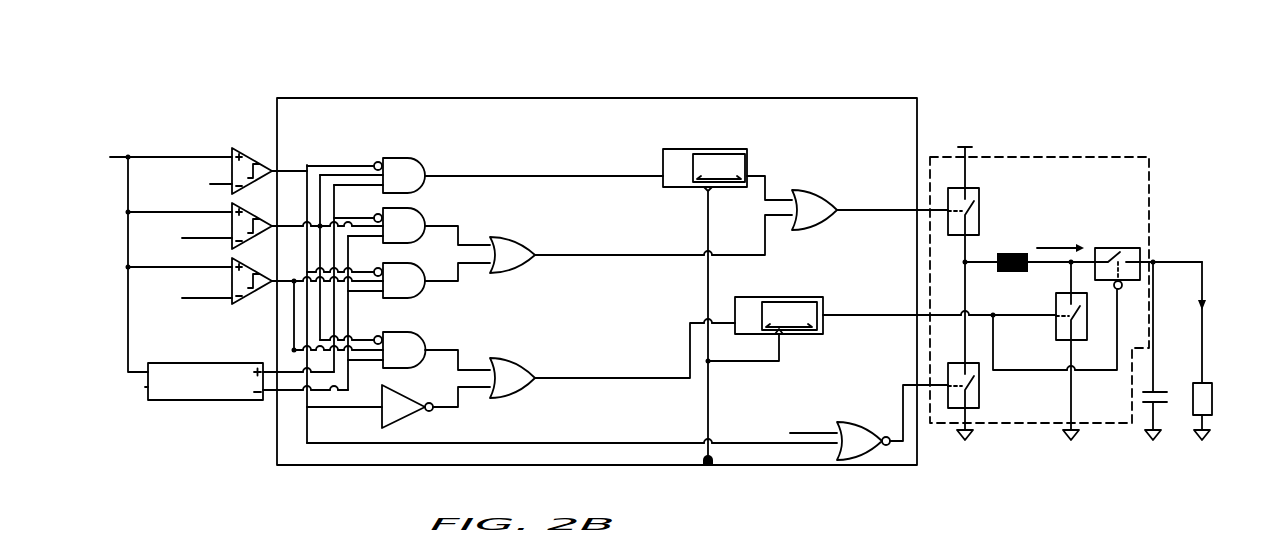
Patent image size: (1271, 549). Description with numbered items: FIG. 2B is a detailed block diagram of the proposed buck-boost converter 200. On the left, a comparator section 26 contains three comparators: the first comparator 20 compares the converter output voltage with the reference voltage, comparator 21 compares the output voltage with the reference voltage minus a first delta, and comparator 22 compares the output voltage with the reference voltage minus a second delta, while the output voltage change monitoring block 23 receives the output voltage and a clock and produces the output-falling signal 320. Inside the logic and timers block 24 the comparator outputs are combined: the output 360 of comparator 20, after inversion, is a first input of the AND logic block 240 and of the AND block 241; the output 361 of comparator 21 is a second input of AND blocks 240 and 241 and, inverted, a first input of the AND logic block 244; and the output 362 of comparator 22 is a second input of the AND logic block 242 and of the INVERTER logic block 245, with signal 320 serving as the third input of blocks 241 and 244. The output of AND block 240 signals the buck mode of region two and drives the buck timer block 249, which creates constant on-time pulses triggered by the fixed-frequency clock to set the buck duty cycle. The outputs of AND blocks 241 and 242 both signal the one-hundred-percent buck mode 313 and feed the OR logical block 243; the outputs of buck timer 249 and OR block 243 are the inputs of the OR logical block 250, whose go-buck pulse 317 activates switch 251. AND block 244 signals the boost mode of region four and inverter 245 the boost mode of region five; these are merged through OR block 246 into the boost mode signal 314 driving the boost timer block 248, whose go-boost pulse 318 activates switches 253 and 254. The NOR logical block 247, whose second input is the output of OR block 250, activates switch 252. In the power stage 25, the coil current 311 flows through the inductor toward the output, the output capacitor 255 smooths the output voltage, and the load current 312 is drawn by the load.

The buck-boost converter 200 is at (237, 66).
The first comparator 20 is at (250, 157).
The comparator 21 is at (250, 212).
The comparator 22 is at (250, 267).
The output voltage change monitoring block 23 is at (242, 363).
The logic and timers block 24 is at (883, 100).
The power stage 25 is at (1064, 157).
The sensing block 26 is at (255, 450).
The AND logic block 240 is at (389, 159).
The AND logic block 241 is at (384, 208).
The AND logic block 242 is at (394, 264).
The OR logical block 243 is at (521, 230).
The AND logic block 244 is at (394, 332).
The INVERTER logic block 245 is at (401, 398).
The OR gate 246 is at (520, 351).
The NOR logical block 247 is at (861, 413).
The boost timer block 248 is at (781, 300).
The buck timer block 249 is at (709, 154).
The OR logical block 250 is at (814, 184).
The switch 251 is at (955, 188).
The switch 252 is at (957, 363).
The switch 253 is at (1057, 293).
The switch 254 is at (1105, 248).
The output capacitor 255 is at (1138, 391).
The coil current 311 is at (1055, 232).
The load current 312 is at (1178, 313).
The voltage buck mode 313 is at (582, 257).
The boost mode 314 is at (582, 380).
The go_buck pulse 317 is at (862, 212).
The go_boost pulse 318 is at (860, 317).
The Vout_falling signal 320 is at (271, 402).
The output of comparator 20 360 is at (290, 168).
The output of comparator 21 361 is at (290, 223).
The output of comparator 22 362 is at (290, 278).